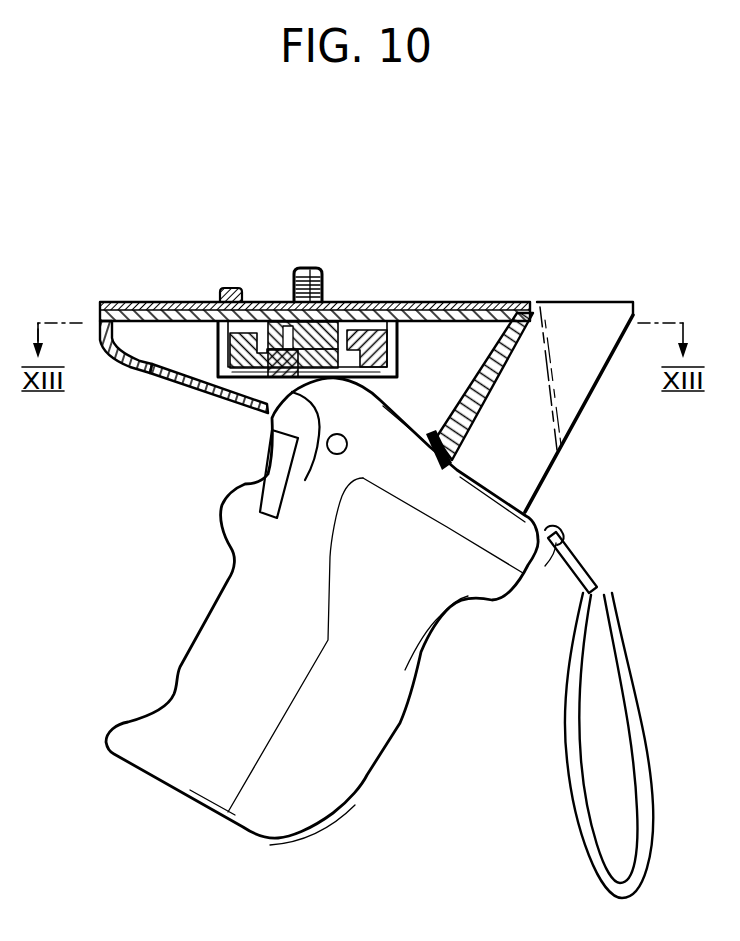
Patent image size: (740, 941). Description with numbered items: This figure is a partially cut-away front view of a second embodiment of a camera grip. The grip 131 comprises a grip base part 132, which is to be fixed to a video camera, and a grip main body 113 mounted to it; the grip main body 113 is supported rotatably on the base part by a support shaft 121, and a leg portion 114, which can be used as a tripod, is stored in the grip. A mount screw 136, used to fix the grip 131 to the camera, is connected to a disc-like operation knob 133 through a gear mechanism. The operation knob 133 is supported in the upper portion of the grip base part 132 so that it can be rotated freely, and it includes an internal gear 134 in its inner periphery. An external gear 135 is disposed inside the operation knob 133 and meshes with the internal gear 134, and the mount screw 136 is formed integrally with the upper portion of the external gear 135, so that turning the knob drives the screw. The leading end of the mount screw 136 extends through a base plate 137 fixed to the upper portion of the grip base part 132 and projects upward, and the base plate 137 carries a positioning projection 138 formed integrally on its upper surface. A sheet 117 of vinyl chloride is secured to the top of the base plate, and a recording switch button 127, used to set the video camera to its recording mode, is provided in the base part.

The grip main body 113 is at (210, 653).
The leg portion 114 is at (580, 388).
The sheet 117 is at (129, 302).
The support shaft 121 is at (346, 450).
The recording switch button 127 is at (255, 489).
The grip 131 is at (130, 378).
The grip base part 132 is at (197, 383).
The operation knob 133 is at (400, 302).
The internal gear 134 is at (357, 302).
The external gear 135 is at (281, 303).
The mount screw 136 is at (311, 266).
The base plate 137 is at (503, 302).
The positioning projection 138 is at (230, 288).